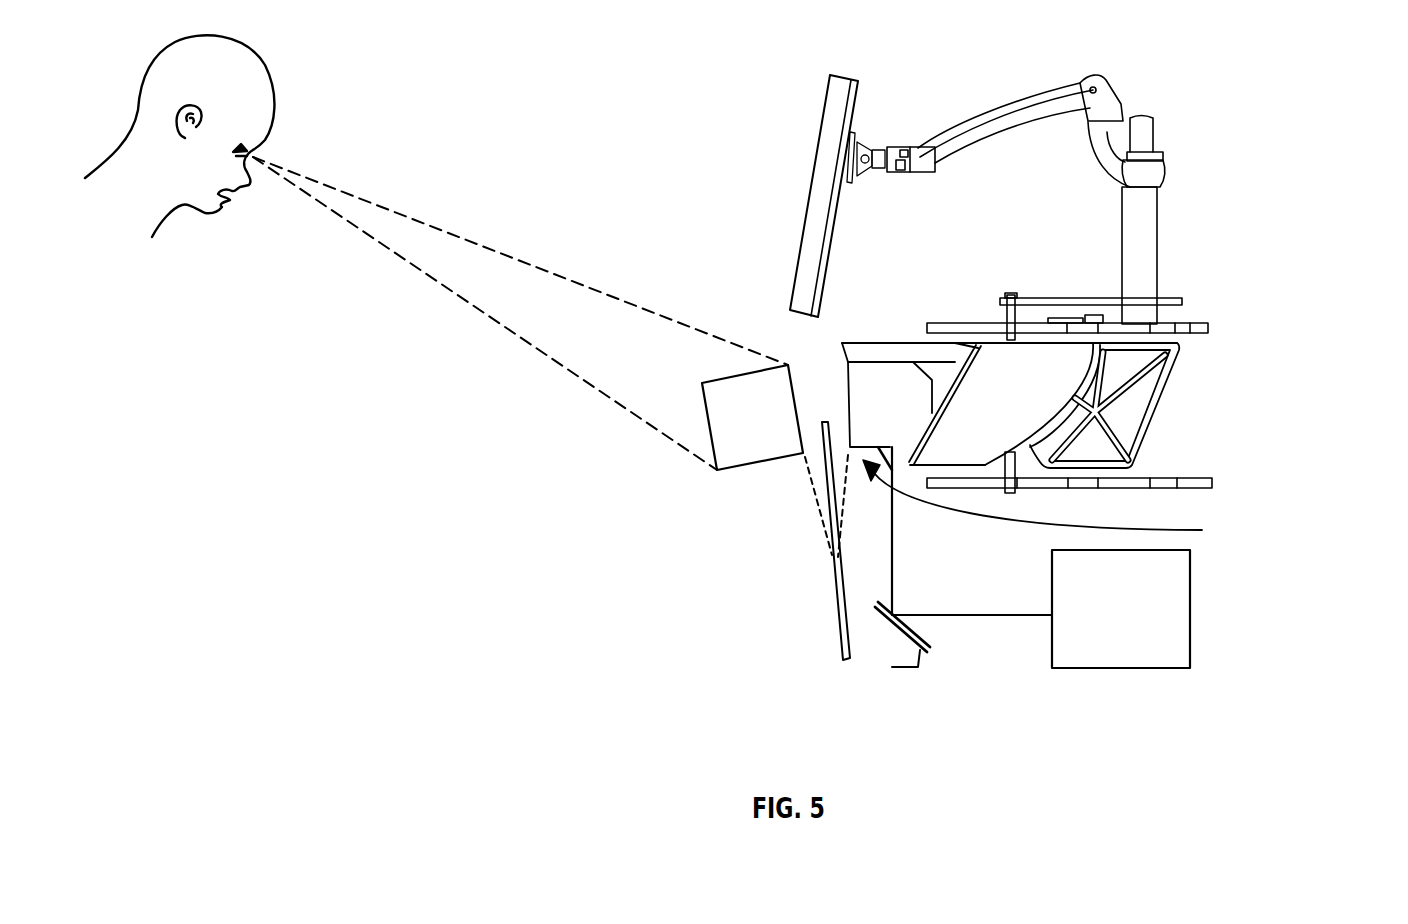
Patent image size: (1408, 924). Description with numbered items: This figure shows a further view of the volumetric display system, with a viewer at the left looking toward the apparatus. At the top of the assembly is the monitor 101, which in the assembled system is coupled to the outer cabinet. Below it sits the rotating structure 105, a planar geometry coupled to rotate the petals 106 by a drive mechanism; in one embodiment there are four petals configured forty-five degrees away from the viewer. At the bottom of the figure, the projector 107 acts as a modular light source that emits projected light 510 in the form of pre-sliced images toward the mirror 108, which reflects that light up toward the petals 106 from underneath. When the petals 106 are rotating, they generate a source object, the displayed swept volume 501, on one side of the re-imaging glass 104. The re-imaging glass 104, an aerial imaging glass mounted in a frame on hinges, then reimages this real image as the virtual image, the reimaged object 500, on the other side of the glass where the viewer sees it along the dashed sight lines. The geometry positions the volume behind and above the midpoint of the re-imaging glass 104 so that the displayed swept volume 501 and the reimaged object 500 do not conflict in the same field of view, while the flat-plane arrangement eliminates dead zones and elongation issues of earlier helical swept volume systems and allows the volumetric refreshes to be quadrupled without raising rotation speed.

The monitor 101 is at (815, 118).
The re-imaging glass 104 is at (832, 600).
The rotating structure 105 is at (1197, 315).
The petals 106 is at (1163, 403).
The projector 107 is at (1140, 673).
The mirror 108 is at (887, 672).
The reimaged object 500 is at (753, 477).
The displayed swept volume 501 is at (1126, 528).
The projected light 510 is at (997, 623).